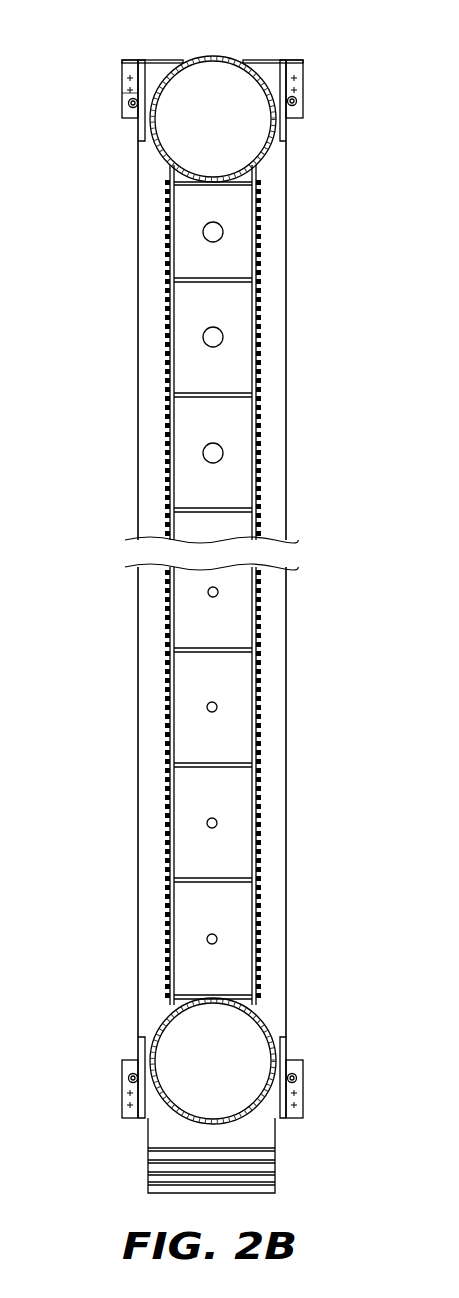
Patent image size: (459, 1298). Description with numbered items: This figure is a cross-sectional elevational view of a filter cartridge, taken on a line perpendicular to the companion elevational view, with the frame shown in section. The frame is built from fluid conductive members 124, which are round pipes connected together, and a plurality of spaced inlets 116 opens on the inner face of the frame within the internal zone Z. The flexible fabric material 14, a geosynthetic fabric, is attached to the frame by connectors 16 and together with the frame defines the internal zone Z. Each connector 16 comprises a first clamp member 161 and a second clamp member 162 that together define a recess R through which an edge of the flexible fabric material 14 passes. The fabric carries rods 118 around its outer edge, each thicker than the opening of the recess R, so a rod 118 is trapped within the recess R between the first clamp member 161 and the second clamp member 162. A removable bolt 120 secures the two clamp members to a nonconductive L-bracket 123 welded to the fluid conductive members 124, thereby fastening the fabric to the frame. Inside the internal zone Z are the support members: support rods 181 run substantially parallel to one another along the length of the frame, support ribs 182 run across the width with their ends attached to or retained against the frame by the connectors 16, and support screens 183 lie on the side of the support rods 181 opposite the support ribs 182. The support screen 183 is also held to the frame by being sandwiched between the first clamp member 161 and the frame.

The flexible fabric material 14 is at (138, 223).
The connectors 16 is at (85, 110).
The spaced inlets 116 is at (203, 453).
The rods 118 is at (131, 107).
The removable bolt 120 is at (125, 82).
The L-bracket 123 is at (149, 60).
The fluid conductive members 124 is at (263, 1025).
The first clamp member 161 is at (140, 137).
The second clamp member 162 is at (132, 61).
The support rods 181 is at (258, 718).
The support ribs 182 is at (232, 762).
The support screens 183 is at (258, 772).
The recess R is at (125, 93).
The internal zone Z is at (203, 365).